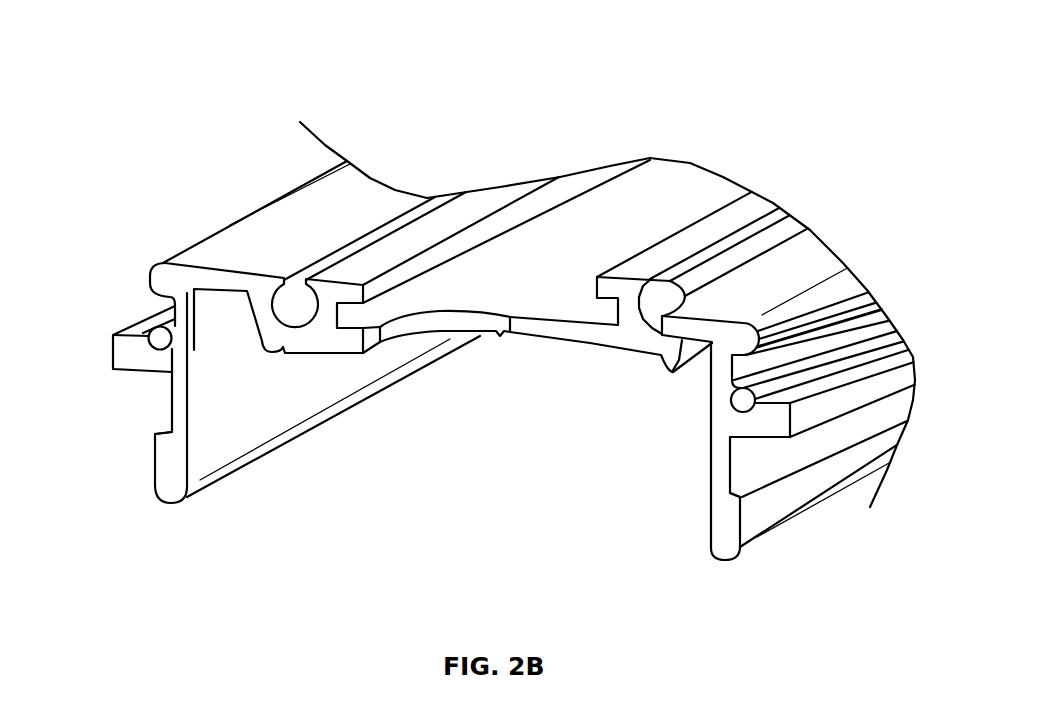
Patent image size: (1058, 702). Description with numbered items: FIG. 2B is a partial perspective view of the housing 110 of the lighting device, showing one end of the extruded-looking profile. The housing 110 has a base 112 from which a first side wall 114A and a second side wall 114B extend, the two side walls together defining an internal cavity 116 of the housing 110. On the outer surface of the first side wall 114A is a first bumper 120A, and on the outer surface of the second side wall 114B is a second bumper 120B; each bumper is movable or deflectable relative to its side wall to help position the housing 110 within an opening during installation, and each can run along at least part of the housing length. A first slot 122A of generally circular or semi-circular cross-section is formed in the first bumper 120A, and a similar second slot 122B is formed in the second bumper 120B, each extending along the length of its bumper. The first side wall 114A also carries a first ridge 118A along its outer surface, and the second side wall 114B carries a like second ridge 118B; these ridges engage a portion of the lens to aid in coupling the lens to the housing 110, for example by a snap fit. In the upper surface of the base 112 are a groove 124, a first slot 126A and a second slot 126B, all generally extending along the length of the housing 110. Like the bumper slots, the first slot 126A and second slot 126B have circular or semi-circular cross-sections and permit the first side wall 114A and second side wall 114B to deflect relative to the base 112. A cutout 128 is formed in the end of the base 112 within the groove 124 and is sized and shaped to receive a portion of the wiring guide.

The housing 110 is at (212, 67).
The base 112 is at (487, 200).
The first side wall 114A is at (237, 435).
The second side wall 114B is at (710, 540).
The internal cavity 116 is at (432, 518).
The first ridge 118A is at (168, 433).
The second ridge 118B is at (730, 493).
The first bumper 120A is at (120, 340).
The second bumper 120B is at (768, 427).
The first slot 122A is at (156, 329).
The second slot 122B is at (735, 400).
The groove 124 is at (652, 163).
The first slot 126A is at (401, 219).
The second slot 126B is at (760, 228).
The cutout 128 is at (550, 325).